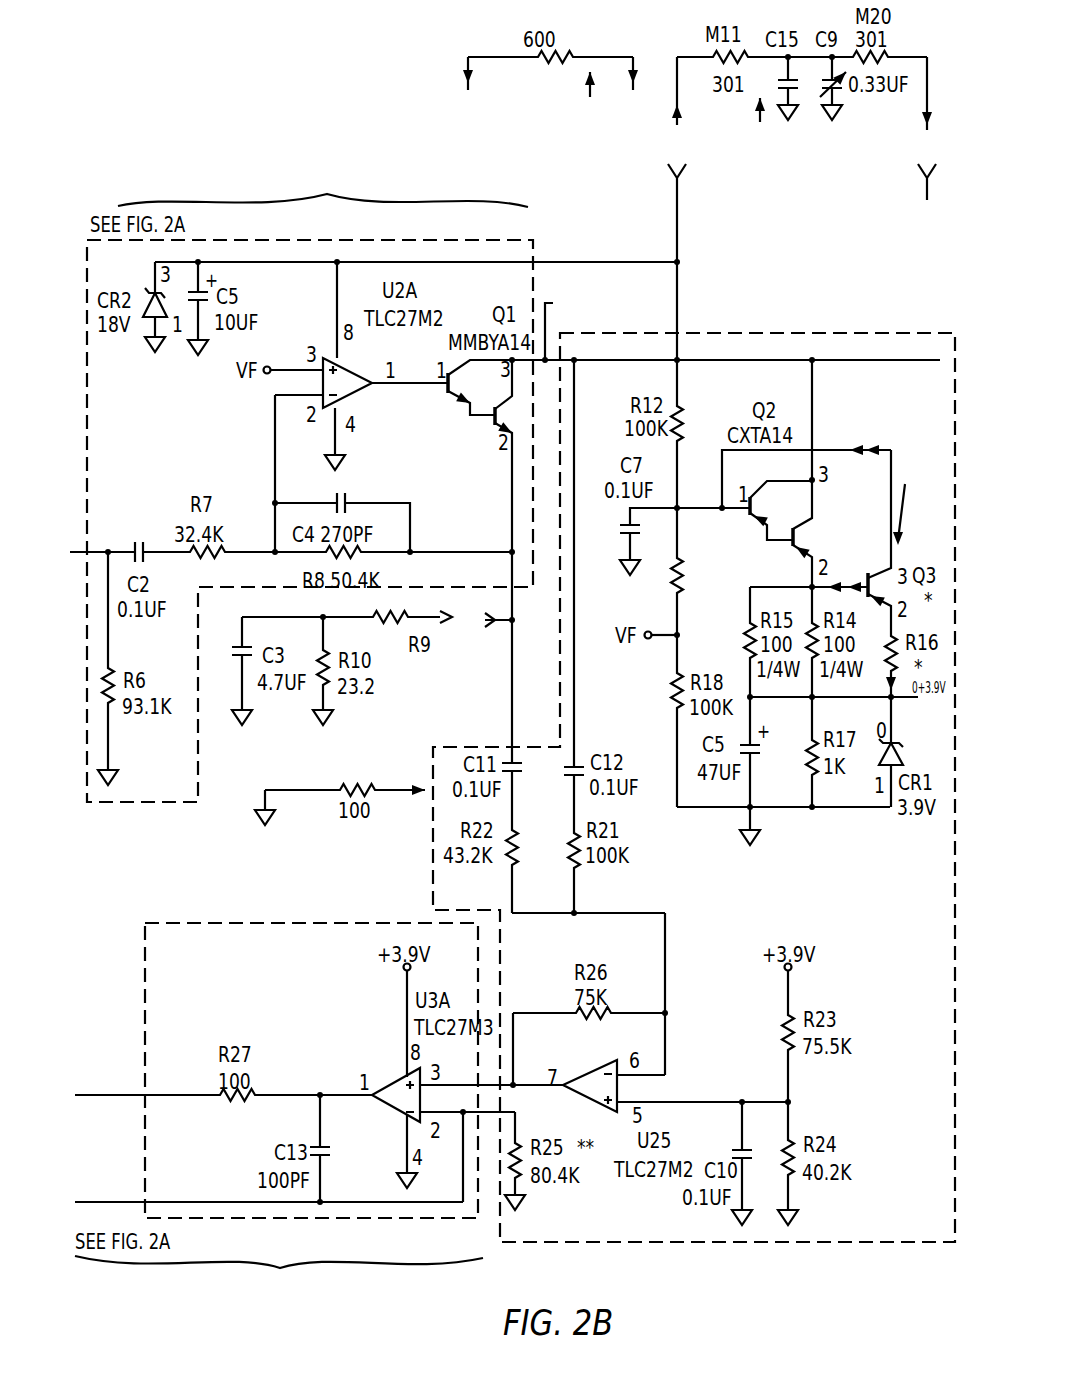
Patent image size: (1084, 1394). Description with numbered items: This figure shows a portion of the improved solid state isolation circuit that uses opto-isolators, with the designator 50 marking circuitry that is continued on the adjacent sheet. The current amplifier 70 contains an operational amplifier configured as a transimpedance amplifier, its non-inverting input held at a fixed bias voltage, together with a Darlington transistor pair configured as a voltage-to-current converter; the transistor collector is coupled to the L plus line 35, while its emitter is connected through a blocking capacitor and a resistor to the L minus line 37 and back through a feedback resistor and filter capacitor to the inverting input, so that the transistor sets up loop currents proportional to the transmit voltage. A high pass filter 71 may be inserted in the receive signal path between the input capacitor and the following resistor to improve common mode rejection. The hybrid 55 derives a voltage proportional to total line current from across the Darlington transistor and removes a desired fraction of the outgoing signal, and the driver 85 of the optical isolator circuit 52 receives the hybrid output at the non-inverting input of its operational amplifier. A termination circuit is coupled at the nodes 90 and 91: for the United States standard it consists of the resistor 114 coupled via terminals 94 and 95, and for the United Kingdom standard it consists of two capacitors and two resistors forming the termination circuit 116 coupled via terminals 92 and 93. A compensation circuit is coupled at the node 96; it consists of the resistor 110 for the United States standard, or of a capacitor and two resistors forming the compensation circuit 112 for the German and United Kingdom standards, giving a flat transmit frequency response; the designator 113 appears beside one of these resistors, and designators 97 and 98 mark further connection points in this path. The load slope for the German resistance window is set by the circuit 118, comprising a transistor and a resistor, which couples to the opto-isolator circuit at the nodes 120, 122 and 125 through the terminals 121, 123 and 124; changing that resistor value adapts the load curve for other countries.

The L+ line 35 is at (580, 329).
The L– line 37 is at (574, 913).
The circuit portion shown in FIG. 2A 50 is at (323, 186).
The optical isolator circuit 52 is at (279, 1280).
The hybrid 55 is at (627, 1245).
The current amplifier 70 is at (142, 804).
The high pass filter 71 is at (163, 518).
The driver 85 is at (205, 922).
The node 90 is at (680, 182).
The node 91 is at (924, 182).
The terminal 92 is at (677, 125).
The terminal 93 is at (927, 130).
The terminal 94 is at (468, 92).
The terminal 95 is at (633, 92).
The node 96 is at (485, 616).
The signal path 97 is at (447, 614).
The signal input path 98 is at (410, 789).
The resistor 110 is at (296, 820).
The compensation circuit 112 is at (234, 689).
The resistor R9 113 is at (341, 634).
The resistor 114 is at (590, 97).
The termination circuit 116 is at (760, 122).
The circuit 118 is at (904, 482).
The node 120 is at (856, 445).
The terminal 121 is at (864, 447).
The node 122 is at (829, 585).
The terminal 123 is at (850, 578).
The terminal 124 is at (888, 680).
The node 125 is at (891, 700).